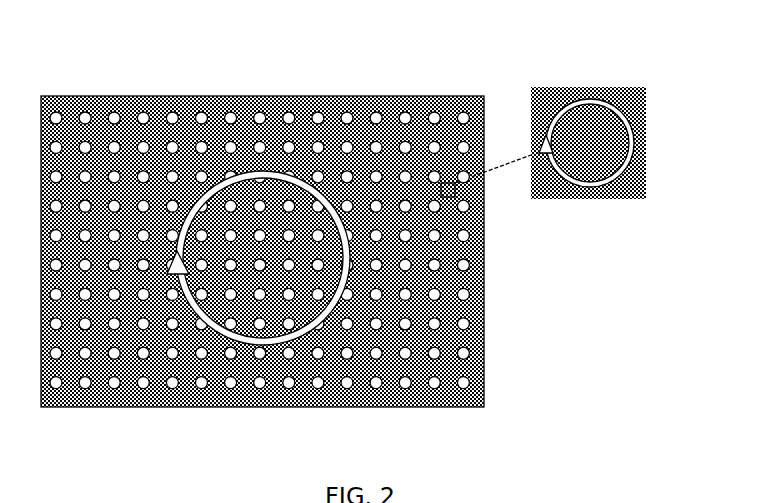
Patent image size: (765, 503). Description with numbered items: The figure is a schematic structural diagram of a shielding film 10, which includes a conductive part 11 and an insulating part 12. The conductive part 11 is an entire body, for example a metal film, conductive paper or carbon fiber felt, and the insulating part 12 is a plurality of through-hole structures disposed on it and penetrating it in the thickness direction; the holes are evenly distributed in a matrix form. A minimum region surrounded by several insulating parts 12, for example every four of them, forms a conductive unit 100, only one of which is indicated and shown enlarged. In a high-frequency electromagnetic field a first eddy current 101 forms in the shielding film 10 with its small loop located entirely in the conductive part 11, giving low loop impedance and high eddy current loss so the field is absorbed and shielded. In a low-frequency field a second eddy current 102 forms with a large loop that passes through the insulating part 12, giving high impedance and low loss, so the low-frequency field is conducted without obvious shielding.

The shielding film 10 is at (79, 67).
The conductive part 11 is at (270, 100).
The insulating part 12 is at (193, 104).
The conductive unit 100 is at (538, 58).
The first eddy current 101 is at (605, 168).
The second eddy current 102 is at (280, 337).